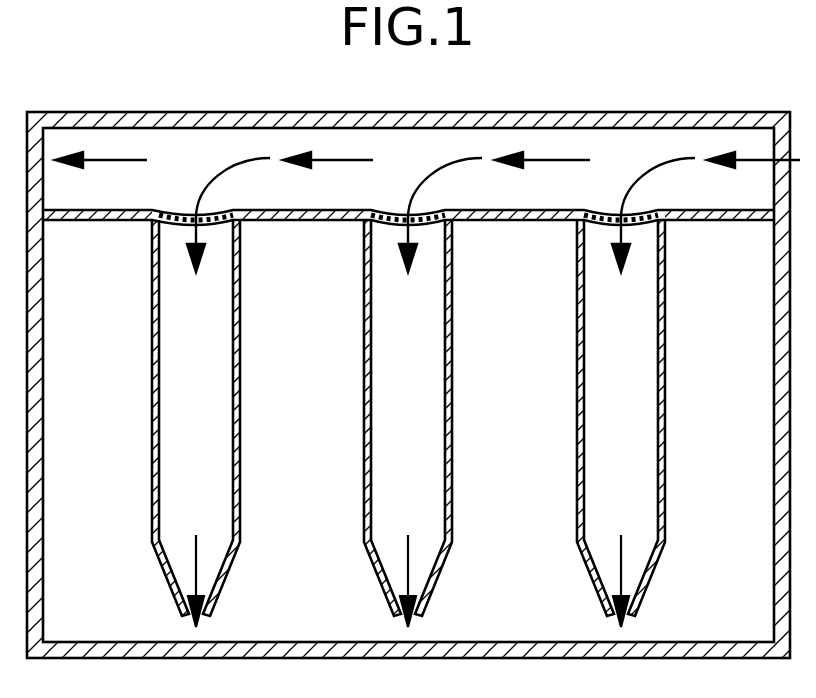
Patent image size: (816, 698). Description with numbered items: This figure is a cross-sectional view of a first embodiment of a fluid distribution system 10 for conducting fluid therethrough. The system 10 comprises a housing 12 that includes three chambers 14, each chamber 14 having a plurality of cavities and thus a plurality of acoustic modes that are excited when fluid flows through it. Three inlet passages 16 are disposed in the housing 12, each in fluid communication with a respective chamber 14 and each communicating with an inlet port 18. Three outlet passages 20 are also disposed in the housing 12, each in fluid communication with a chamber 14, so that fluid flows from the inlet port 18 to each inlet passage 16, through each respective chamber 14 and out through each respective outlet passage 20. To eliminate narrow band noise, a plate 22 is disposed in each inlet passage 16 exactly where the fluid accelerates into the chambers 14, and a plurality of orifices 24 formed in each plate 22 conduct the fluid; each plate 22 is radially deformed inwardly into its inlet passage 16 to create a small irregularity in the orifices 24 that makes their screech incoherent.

The fluid distribution system 10 is at (262, 80).
The housing 12 is at (636, 113).
The chamber 14 is at (180, 488).
The inlet passage 16 is at (183, 231).
The inlet port 18 is at (420, 160).
The outlet passage 20 is at (187, 619).
The plate 22 is at (164, 209).
The orifice 24 is at (214, 211).